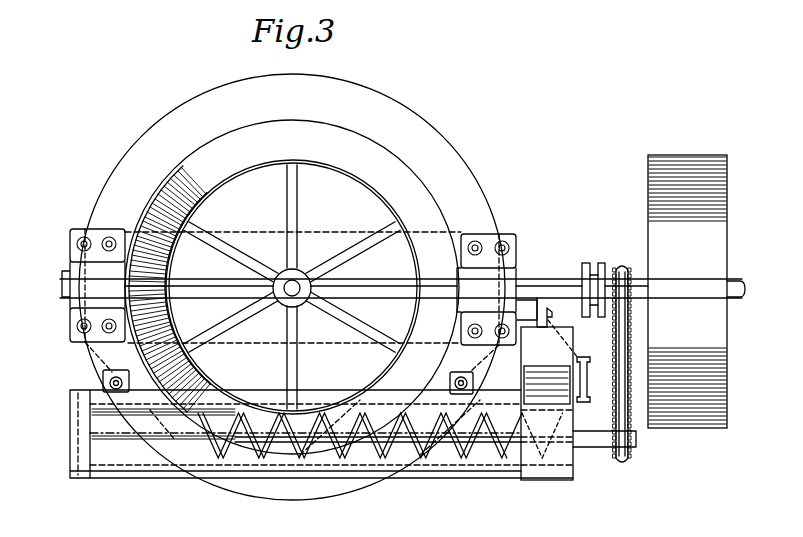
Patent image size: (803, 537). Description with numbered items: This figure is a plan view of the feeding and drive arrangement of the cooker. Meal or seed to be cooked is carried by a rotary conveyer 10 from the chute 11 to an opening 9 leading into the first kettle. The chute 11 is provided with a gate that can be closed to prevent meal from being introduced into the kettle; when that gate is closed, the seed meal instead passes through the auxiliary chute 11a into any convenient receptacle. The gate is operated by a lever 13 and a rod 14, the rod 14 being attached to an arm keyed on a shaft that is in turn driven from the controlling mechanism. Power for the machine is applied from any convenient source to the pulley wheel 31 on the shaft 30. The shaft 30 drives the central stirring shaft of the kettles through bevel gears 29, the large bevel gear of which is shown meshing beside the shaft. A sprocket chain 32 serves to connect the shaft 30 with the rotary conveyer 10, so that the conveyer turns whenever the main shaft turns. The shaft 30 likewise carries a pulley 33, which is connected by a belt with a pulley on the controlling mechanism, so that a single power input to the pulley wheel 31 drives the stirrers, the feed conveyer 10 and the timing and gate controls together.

The opening 9 is at (255, 418).
The rotary conveyer 10 is at (477, 444).
The chute 11 is at (557, 452).
The auxiliary chute 11a is at (545, 390).
The lever 13 is at (549, 314).
The rod 14 is at (573, 357).
The bevel gears 29 is at (171, 272).
The shaft 30 is at (368, 292).
The pulley wheel 31 is at (687, 291).
The sprocket chain 32 is at (616, 381).
The pulley 33 is at (590, 265).